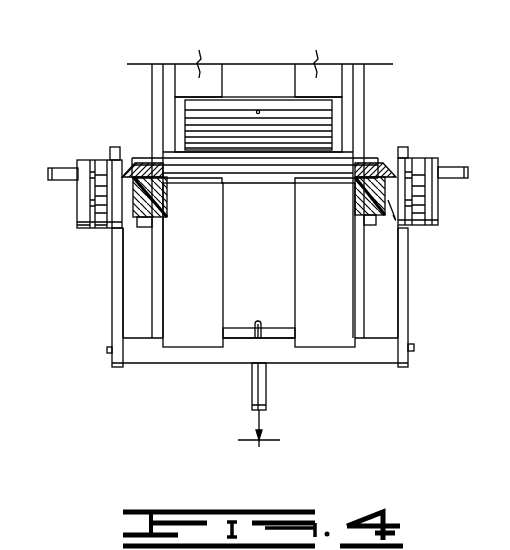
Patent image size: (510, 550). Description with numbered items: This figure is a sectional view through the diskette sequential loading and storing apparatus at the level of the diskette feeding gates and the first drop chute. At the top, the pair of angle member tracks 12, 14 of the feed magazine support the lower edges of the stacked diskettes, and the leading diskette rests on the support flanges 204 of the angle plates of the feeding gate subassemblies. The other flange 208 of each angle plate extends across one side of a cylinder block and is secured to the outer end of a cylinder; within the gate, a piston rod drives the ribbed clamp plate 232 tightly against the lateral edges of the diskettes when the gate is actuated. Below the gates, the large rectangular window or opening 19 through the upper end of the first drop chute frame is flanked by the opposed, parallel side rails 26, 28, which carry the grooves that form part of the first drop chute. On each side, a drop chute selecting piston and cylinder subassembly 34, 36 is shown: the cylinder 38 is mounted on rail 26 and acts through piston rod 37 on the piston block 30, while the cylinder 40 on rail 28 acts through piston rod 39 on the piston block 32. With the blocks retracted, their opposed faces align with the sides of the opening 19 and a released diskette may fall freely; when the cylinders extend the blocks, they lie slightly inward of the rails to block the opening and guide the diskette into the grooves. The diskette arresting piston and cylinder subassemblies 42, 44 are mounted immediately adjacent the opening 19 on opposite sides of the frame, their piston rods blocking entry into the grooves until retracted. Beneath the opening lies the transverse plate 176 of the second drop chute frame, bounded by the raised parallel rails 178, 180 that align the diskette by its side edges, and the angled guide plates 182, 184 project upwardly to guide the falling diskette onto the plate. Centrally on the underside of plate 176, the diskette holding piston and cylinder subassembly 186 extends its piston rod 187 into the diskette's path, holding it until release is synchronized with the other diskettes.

The angle member track 12 is at (339, 70).
The angle member track 14 is at (183, 68).
The window or opening 19 is at (288, 170).
The side rail 26 is at (375, 170).
The side rail 28 is at (143, 165).
The piston block 30 is at (160, 205).
The piston block 32 is at (357, 205).
The drop chute selecting piston and cylinder subassembly 34 is at (95, 238).
The drop chute selecting piston and cylinder subassembly 36 is at (418, 236).
The piston rod 37 is at (126, 205).
The cylinder 38 is at (83, 202).
The piston rod 39 is at (388, 220).
The cylinder 40 is at (432, 163).
The diskette arresting piston and cylinder subassembly 42 is at (460, 182).
The diskette arresting piston and cylinder subassembly 44 is at (67, 160).
The transverse plate 176 is at (323, 352).
The rail 178 is at (375, 352).
The rail 180 is at (140, 353).
The angled guide plate 182 is at (335, 309).
The angled guide plate 184 is at (205, 309).
The diskette holding piston and cylinder subassembly 186 is at (240, 408).
The piston rod 187 is at (255, 340).
The support flange 204 is at (182, 147).
The flange 208 is at (337, 132).
The ribbed clamp plate 232 is at (250, 128).